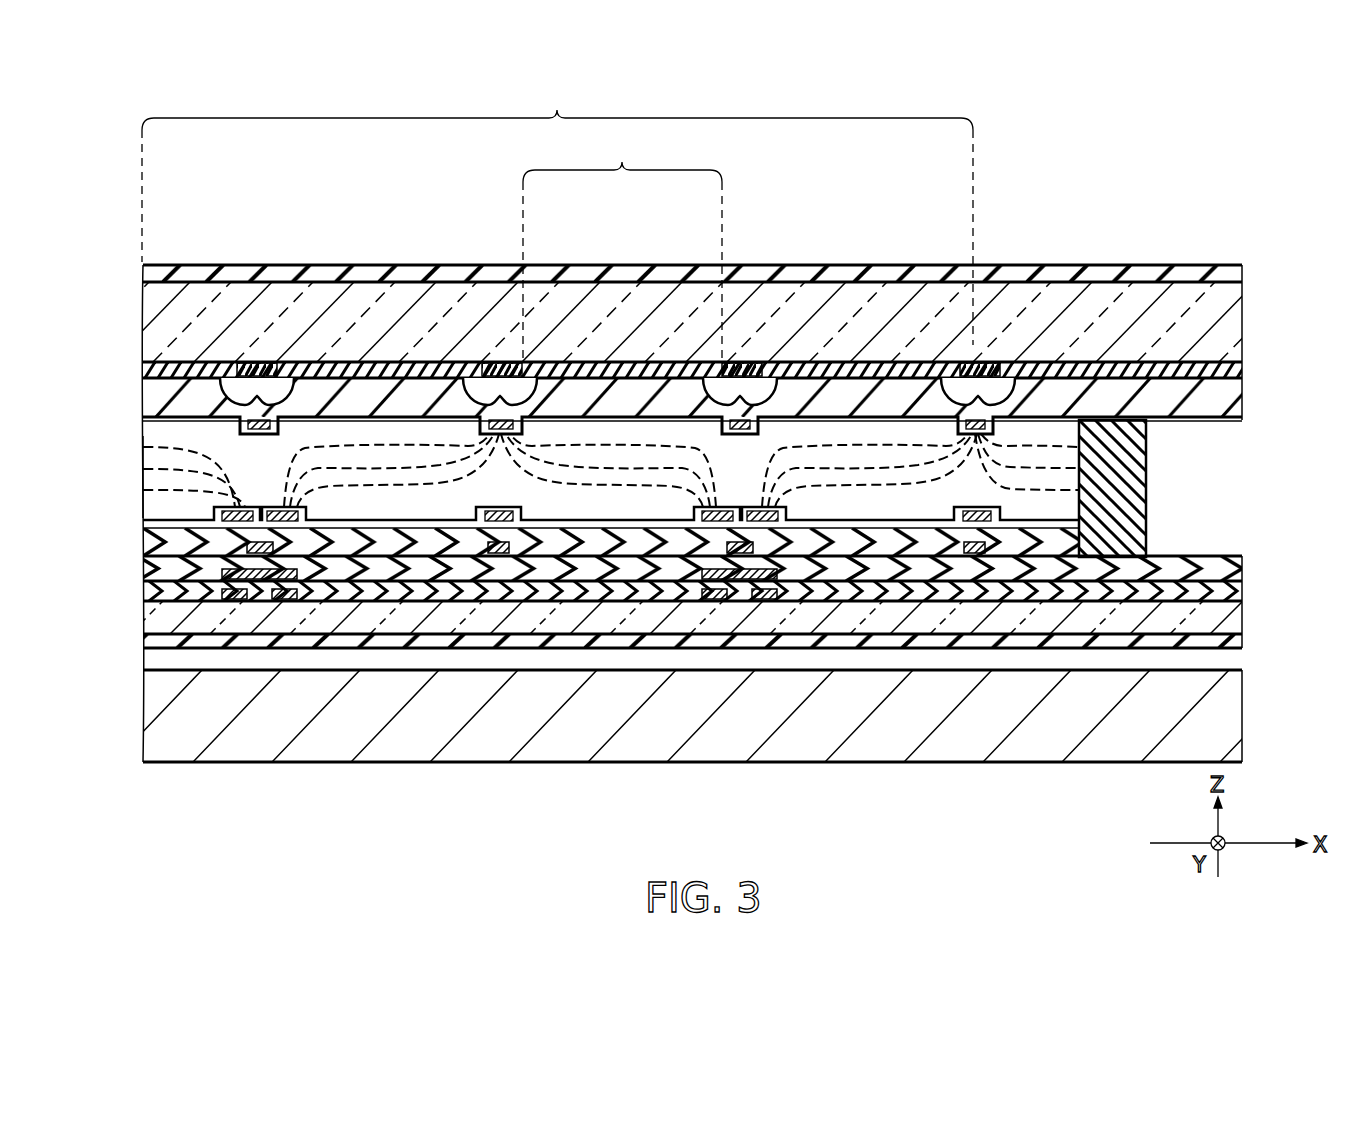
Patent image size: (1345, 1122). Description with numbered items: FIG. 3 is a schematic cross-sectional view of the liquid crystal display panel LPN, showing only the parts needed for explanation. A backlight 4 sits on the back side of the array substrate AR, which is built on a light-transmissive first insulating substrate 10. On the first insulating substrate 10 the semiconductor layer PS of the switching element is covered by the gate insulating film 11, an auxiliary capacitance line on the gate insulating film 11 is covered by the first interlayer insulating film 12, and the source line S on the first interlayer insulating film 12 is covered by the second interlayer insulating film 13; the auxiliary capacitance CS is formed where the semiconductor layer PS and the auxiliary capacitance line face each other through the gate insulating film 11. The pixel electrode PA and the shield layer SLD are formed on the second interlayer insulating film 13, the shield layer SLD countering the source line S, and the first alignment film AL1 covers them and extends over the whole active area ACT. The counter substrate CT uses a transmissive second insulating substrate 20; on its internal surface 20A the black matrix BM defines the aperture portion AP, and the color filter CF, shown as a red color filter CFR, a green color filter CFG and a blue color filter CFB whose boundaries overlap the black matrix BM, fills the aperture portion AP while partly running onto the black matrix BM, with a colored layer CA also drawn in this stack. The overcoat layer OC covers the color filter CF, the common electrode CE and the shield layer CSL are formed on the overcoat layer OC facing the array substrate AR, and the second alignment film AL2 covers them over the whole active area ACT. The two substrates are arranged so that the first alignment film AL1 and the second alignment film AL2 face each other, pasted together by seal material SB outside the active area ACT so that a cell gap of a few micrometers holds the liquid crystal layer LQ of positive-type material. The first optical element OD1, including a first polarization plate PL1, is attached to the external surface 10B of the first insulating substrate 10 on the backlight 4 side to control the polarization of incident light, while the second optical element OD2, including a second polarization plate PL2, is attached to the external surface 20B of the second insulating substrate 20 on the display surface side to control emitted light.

The active area ACT is at (557, 215).
The aperture portion AP is at (622, 250).
The liquid crystal display panel LPN is at (1258, 294).
The second insulating substrate 20 is at (683, 322).
The internal surface 20A is at (150, 386).
The external surface 20B is at (178, 268).
The second optical element OD2 is at (643, 278).
The second polarization plate PL2 is at (143, 273).
The counter substrate CT is at (132, 333).
The color filter CF is at (660, 304).
The red color filter CFR is at (197, 385).
The green color filter CFG is at (393, 378).
The blue color filter CFB is at (606, 380).
The black matrix BM is at (694, 300).
The shield layer CSL is at (296, 398).
The colored layer / conductive portion CA is at (522, 368).
The overcoat layer OC is at (687, 400).
The common electrode CE is at (232, 429).
The second alignment film AL2 is at (1112, 427).
The liquid crystal layer LQ is at (150, 513).
The seal material SB is at (1140, 487).
The first alignment film AL1 is at (1112, 520).
The pixel electrode PA is at (272, 507).
The shield layer SLD is at (497, 510).
The auxiliary capacitance CS is at (314, 556).
The second interlayer insulating film 13 is at (1010, 540).
The first interlayer insulating film 12 is at (1242, 560).
The gate insulating film 11 is at (1242, 589).
The first insulating substrate 10 is at (1242, 620).
The source line S is at (257, 580).
The semiconductor layer PS is at (228, 600).
The array substrate AR is at (675, 631).
The first optical element OD1 is at (643, 645).
The first polarization plate PL1 is at (145, 640).
The external surface 10B is at (180, 655).
The backlight 4 is at (143, 720).